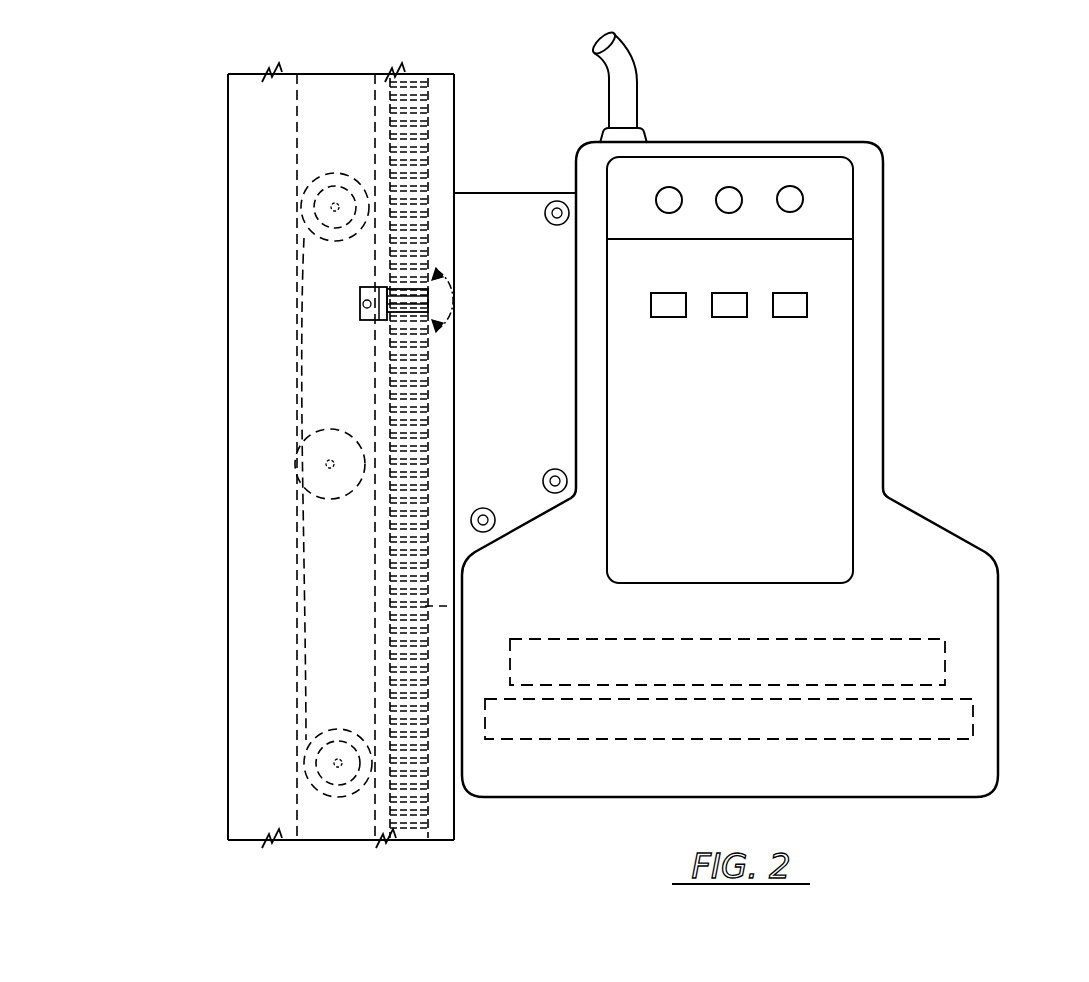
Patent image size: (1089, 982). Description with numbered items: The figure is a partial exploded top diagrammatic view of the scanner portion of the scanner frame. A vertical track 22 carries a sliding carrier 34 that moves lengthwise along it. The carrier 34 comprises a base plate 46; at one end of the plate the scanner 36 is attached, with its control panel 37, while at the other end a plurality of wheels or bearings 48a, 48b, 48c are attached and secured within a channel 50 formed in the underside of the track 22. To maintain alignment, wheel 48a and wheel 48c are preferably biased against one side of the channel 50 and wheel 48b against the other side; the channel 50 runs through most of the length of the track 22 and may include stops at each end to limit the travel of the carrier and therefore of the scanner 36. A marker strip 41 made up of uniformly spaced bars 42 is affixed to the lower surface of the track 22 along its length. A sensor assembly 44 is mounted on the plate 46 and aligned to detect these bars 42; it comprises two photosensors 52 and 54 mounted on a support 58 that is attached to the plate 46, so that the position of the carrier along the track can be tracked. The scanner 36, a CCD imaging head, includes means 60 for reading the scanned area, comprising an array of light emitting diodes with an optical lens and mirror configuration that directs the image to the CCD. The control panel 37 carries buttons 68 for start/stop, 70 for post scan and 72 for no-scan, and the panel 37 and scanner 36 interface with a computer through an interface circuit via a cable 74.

The vertical track 22 is at (234, 96).
The sliding carrier 34 is at (498, 193).
The scanner 36 is at (928, 527).
The control panel 37 is at (853, 278).
The marker strip 41 is at (456, 77).
The bars 42 is at (418, 131).
The sensor assembly 44 is at (359, 294).
The base plate 46 is at (498, 430).
The wheel 48a is at (315, 184).
The wheel 48b is at (323, 495).
The wheel 48c is at (328, 794).
The channel 50 is at (296, 122).
The photosensor 52 is at (407, 288).
The photosensor 54 is at (405, 310).
The support 58 is at (369, 322).
The means for reading an area scanned 60 is at (955, 688).
The START/STOP button 68 is at (668, 318).
The POST SCAN button 70 is at (727, 318).
The NO-SCAN button 72 is at (788, 318).
The cable 74 is at (638, 80).